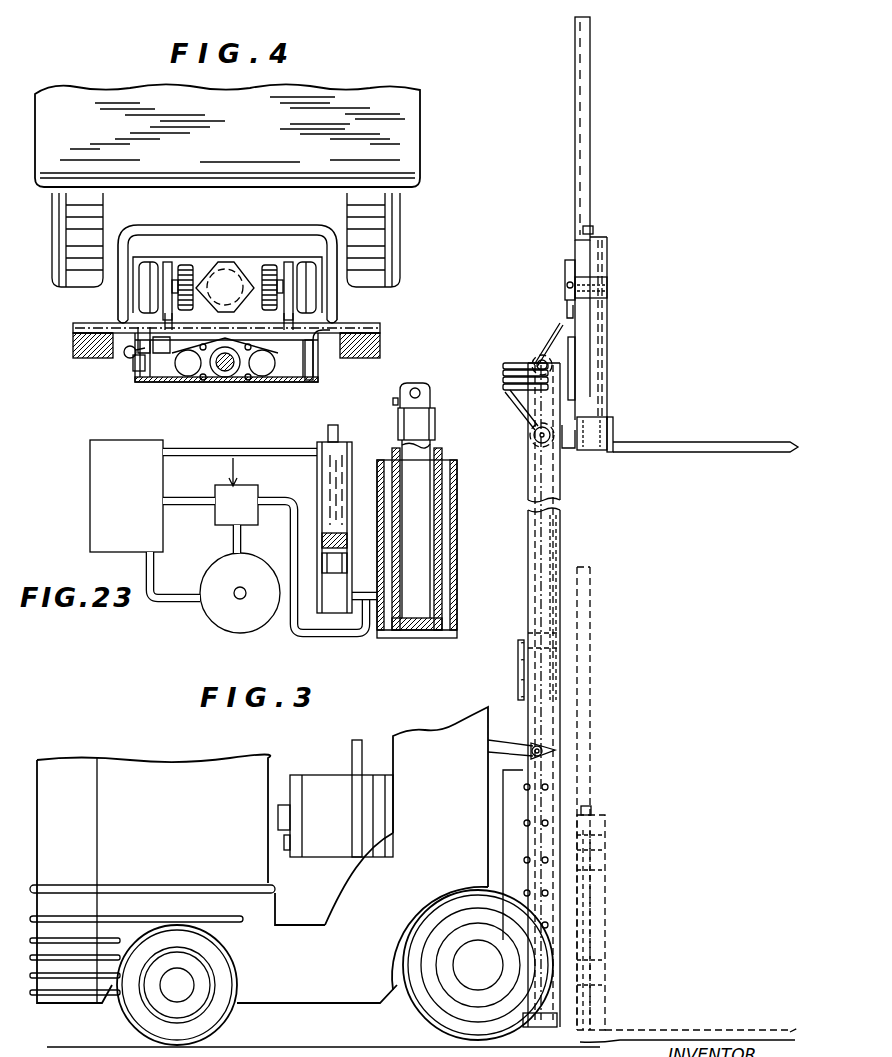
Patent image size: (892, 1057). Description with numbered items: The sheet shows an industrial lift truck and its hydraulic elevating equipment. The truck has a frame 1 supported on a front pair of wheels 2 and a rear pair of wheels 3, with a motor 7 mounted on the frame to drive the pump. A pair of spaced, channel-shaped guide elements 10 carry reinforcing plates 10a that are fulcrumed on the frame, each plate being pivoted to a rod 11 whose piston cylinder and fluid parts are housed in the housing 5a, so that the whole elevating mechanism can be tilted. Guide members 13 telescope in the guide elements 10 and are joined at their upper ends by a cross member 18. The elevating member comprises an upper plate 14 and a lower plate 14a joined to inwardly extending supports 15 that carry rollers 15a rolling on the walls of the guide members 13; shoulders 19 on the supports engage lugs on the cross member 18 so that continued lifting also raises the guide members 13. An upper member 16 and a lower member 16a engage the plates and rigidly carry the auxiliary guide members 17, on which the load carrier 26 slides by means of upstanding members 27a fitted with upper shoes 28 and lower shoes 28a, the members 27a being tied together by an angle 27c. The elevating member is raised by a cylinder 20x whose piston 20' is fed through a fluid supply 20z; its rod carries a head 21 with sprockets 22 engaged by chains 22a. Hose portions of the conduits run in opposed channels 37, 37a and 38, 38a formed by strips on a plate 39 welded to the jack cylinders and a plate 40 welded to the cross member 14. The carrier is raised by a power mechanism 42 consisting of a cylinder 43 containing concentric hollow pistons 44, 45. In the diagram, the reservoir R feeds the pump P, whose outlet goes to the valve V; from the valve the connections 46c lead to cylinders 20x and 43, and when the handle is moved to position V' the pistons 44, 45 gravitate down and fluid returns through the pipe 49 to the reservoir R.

In FIG. 3, the frame 1 is at (315, 972).
In FIG. 4, the front pair of wheels 2 is at (398, 256).
In FIG. 3, the front pair of wheels 2 is at (423, 1008).
In FIG. 3, the rear pair of wheels 3 is at (222, 1017).
In FIG. 4, the housing 5a is at (407, 147).
In FIG. 3, the housing 5a is at (413, 736).
In FIG. 3, the motor 7 is at (330, 852).
In FIG. 4, the guide elements 10 is at (128, 304).
In FIG. 3, the guide elements 10 is at (540, 656).
In FIG. 3, the reinforcing plates 10a is at (508, 790).
In FIG. 3, the rod 11 is at (495, 757).
In FIG. 4, the guide members 13 is at (150, 262).
In FIG. 3, the guide members 13 is at (528, 536).
In FIG. 4, the upper plate 14 is at (333, 323).
In FIG. 3, the upper plate 14 is at (562, 319).
In FIG. 3, the lower plate 14a is at (532, 431).
In FIG. 4, the supports 15 is at (186, 265).
In FIG. 3, the supports 15 is at (566, 341).
In FIG. 4, the rollers 15a is at (168, 262).
In FIG. 3, the rollers 15a is at (525, 365).
In FIG. 4, the upper member 16 is at (75, 331).
In FIG. 3, the upper member 16 is at (566, 308).
In FIG. 3, the lower member 16a is at (570, 450).
In FIG. 4, the auxiliary guide members 17 is at (84, 359).
In FIG. 4, the cross member 18 is at (243, 233).
In FIG. 3, the cross member 18 is at (505, 395).
In FIG. 4, the shoulders 19 is at (284, 265).
In FIG. 23, the cylinder 20x is at (338, 452).
In FIG. 23, the piston 20' is at (352, 554).
In FIG. 23, the fluid supply 20z is at (360, 640).
In FIG. 4, the head 21 is at (248, 272).
In FIG. 4, the sprockets 22 is at (220, 264).
In FIG. 3, the chains 22a is at (555, 527).
In FIG. 3, the load carrier 26 is at (646, 381).
In FIG. 3, the upstanding members 27a is at (608, 327).
In FIG. 3, the angle 27c is at (594, 236).
In FIG. 3, the upper shoes 28 is at (608, 292).
In FIG. 3, the lower shoes 28a is at (608, 430).
In FIG. 4, the channel 37 is at (324, 375).
In FIG. 4, the channel 37a is at (318, 349).
In FIG. 4, the channel 38 is at (133, 377).
In FIG. 4, the channel 38a is at (131, 357).
In FIG. 4, the plate 39 is at (262, 387).
In FIG. 4, the plate 40 is at (228, 280).
In FIG. 23, the power mechanism 42 is at (487, 601).
In FIG. 23, the cylinder 43 is at (457, 487).
In FIG. 23, the hollow piston 44 is at (443, 497).
In FIG. 23, the hollow piston 45 is at (423, 412).
In FIG. 23, the fluid supply and discharge connections 46c is at (293, 503).
In FIG. 23, the pipe 49 is at (188, 500).
In FIG. 23, the reservoir R is at (90, 540).
In FIG. 23, the valve V is at (223, 483).
In FIG. 23, the handle position V' is at (247, 454).
In FIG. 23, the pump P is at (225, 620).